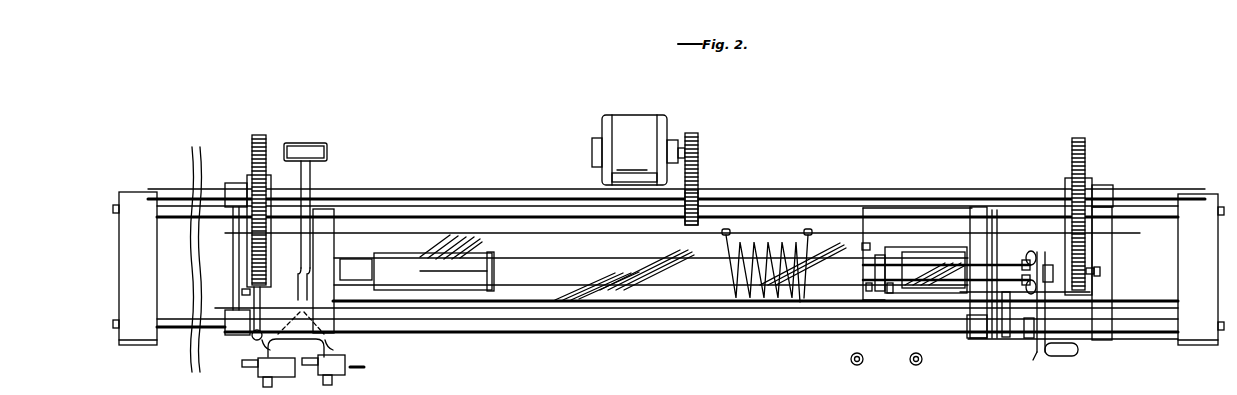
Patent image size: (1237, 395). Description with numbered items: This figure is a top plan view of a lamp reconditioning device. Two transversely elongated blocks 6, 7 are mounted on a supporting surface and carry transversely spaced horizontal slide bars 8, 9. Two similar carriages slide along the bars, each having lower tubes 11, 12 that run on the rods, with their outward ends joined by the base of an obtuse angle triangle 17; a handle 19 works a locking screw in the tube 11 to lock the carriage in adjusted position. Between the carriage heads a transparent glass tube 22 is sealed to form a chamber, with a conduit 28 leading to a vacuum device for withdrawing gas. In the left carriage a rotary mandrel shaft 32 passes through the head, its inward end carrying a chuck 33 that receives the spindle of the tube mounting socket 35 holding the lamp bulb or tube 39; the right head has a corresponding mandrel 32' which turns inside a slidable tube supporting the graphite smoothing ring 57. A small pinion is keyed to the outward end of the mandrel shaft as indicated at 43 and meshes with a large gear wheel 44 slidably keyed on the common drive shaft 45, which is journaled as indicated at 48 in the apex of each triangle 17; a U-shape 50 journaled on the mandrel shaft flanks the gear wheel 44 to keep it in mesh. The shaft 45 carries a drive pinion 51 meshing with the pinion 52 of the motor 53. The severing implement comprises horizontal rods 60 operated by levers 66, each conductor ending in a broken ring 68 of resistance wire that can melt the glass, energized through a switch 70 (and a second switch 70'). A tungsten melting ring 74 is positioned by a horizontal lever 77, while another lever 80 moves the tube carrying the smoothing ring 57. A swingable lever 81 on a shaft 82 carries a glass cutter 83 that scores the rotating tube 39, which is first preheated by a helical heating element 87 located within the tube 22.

The block 6 is at (130, 265).
The block 7 is at (1190, 248).
The slide bar 8 is at (1147, 220).
The slide bar 9 is at (1142, 320).
The lower tube 11 is at (1005, 338).
The lower tube 12 is at (1017, 217).
The obtuse angle triangle 17 is at (1103, 297).
The handle 19 is at (1073, 356).
The transparent glass tube 22 is at (558, 232).
The conduit 28 is at (322, 143).
The rotary mandrel shaft 32 is at (221, 258).
The mandrel 32' is at (1121, 276).
The chuck 33 is at (350, 267).
The tube mounting socket 35 is at (420, 257).
The lamp bulb or tube 39 is at (521, 256).
The key 43 is at (243, 292).
The gear wheel 44 is at (263, 135).
The common drive shaft 45 is at (425, 184).
The journal 48 is at (233, 183).
The U-shape 50 is at (267, 250).
The drive pinion 51 is at (699, 190).
The pinion 52 is at (699, 147).
The motor 53 is at (642, 116).
The graphite smoothing ring 57 is at (891, 293).
The horizontal rod 60 is at (1043, 352).
The lever 66 is at (1034, 253).
The broken ring 68 is at (866, 290).
The switch 70 is at (841, 373).
The roller 70' is at (912, 374).
The tungsten melting ring 74 is at (869, 291).
The horizontal lever 77 is at (1008, 338).
The lever 80 is at (1043, 343).
The swingable lever 81 is at (1002, 218).
The shaft 82 is at (910, 243).
The glass cutter 83 is at (865, 243).
The helical heating element 87 is at (757, 244).